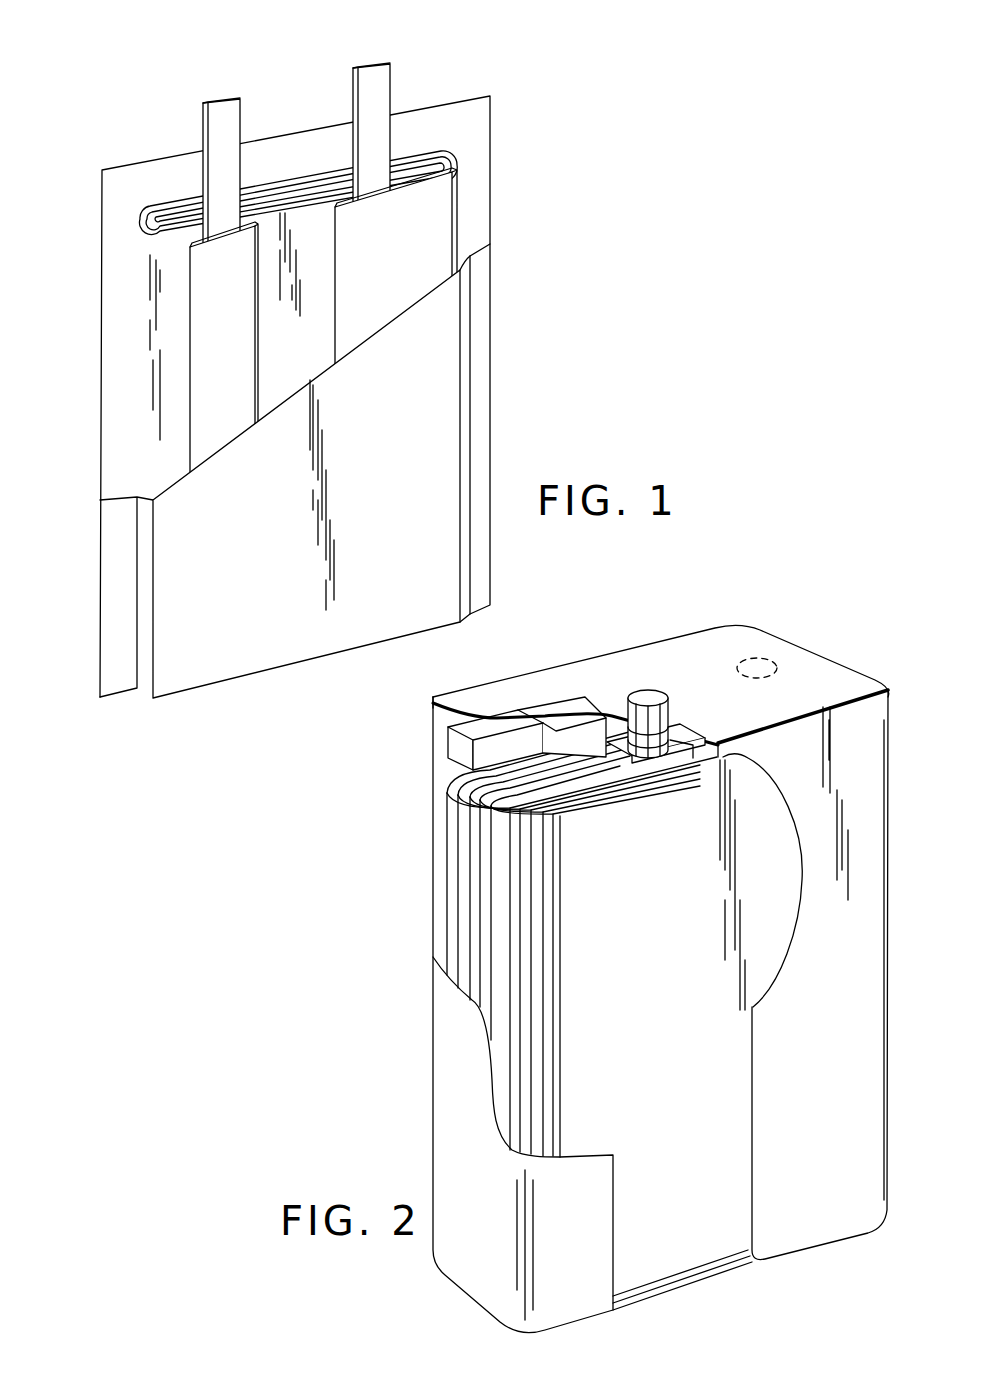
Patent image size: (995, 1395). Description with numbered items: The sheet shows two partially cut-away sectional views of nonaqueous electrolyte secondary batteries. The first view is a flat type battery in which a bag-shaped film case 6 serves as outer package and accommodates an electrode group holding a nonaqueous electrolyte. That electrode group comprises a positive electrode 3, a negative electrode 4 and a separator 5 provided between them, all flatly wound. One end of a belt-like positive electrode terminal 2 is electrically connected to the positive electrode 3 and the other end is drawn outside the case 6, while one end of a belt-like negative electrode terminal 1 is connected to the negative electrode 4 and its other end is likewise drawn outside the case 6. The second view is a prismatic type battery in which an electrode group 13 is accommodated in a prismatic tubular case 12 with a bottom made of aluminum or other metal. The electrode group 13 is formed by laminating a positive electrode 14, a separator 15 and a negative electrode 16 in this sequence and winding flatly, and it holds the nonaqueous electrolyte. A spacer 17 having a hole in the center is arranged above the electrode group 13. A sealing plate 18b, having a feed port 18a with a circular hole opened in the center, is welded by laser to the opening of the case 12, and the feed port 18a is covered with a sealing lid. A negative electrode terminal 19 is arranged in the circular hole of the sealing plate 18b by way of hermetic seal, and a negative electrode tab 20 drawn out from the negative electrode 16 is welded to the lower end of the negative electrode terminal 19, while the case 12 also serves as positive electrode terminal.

In FIG. 1, the negative electrode terminal 1 is at (224, 112).
In FIG. 1, the positive electrode terminal 2 is at (374, 76).
In FIG. 1, the positive electrode 3 is at (427, 230).
In FIG. 1, the negative electrode 4 is at (205, 293).
In FIG. 1, the separator 5 is at (160, 373).
In FIG. 1, the film case 6 is at (428, 438).
In FIG. 2, the case 12 is at (877, 812).
In FIG. 2, the electrode group 13 is at (582, 943).
In FIG. 2, the positive electrode 14 is at (565, 968).
In FIG. 2, the separator 15 is at (545, 1004).
In FIG. 2, the negative electrode 16 is at (623, 947).
In FIG. 2, the spacer 17 is at (455, 744).
In FIG. 2, the feed port 18a is at (765, 660).
In FIG. 2, the sealing plate 18b is at (543, 713).
In FIG. 2, the negative electrode terminal 19 is at (648, 698).
In FIG. 2, the negative electrode tab 20 is at (664, 758).